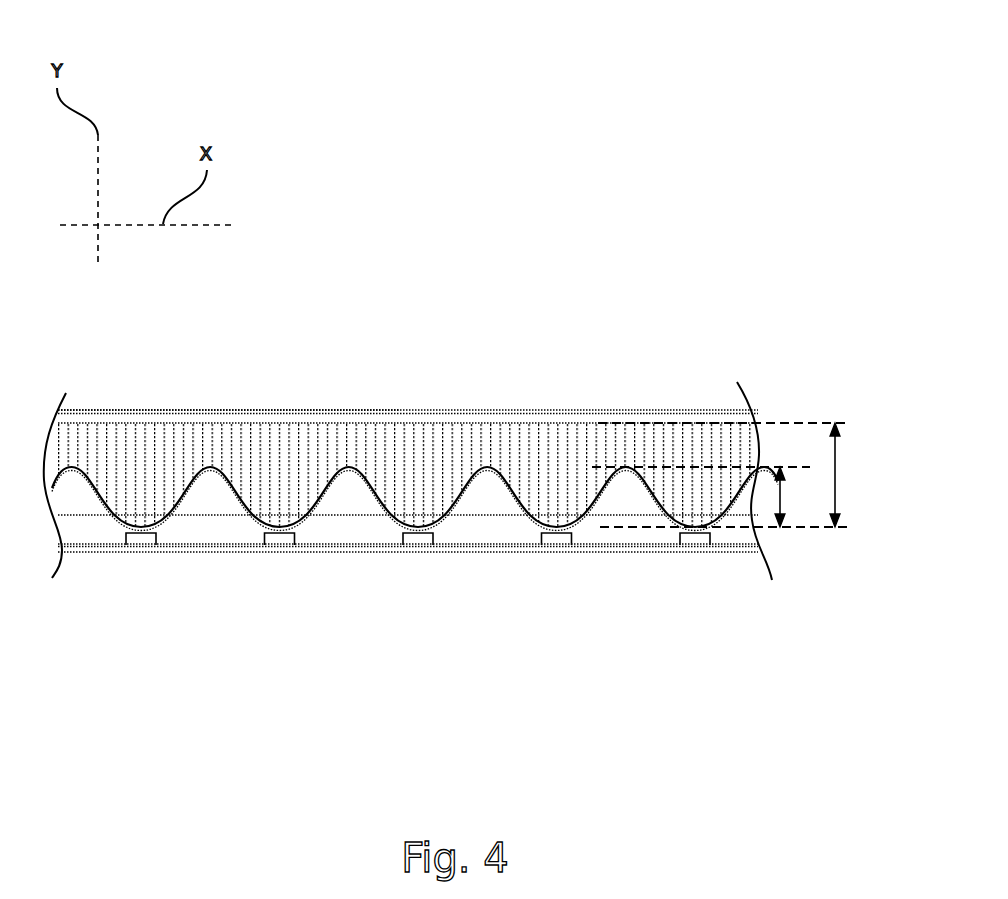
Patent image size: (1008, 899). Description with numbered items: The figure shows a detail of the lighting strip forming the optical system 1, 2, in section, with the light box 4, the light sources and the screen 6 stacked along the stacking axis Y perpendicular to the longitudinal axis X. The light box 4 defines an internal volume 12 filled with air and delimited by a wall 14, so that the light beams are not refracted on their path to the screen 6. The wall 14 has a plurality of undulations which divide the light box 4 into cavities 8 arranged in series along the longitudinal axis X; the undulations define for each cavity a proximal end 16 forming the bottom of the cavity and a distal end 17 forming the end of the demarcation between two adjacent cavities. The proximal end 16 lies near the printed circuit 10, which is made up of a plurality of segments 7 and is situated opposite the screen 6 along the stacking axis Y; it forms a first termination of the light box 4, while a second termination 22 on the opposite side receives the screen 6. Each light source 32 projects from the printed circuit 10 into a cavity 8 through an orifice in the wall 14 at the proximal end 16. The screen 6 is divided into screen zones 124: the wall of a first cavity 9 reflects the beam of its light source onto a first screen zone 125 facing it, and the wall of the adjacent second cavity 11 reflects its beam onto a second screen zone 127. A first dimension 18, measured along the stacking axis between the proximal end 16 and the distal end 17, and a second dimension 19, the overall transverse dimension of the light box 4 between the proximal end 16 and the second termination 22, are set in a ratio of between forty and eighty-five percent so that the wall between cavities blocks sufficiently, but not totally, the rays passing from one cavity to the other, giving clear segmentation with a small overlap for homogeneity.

The optical system 1 is at (408, 308).
The optical system 2 is at (451, 159).
The light box 4 is at (130, 464).
The screen 6 is at (549, 418).
The segment 7 is at (215, 548).
The cavity 8 is at (188, 710).
The first cavity 9 is at (285, 513).
The printed circuit 10 is at (605, 555).
The second cavity 11 is at (413, 513).
The internal volume 12 is at (93, 445).
The wall 14 is at (455, 503).
The proximal end 16 is at (647, 532).
The distal end 17 is at (620, 467).
The first dimension 18 is at (780, 497).
The second dimension 19 is at (836, 474).
The second termination 22 is at (720, 423).
The light source 32 is at (143, 546).
The screen zone 124 is at (265, 323).
The first screen zone 125 is at (222, 400).
The second screen zone 127 is at (355, 400).